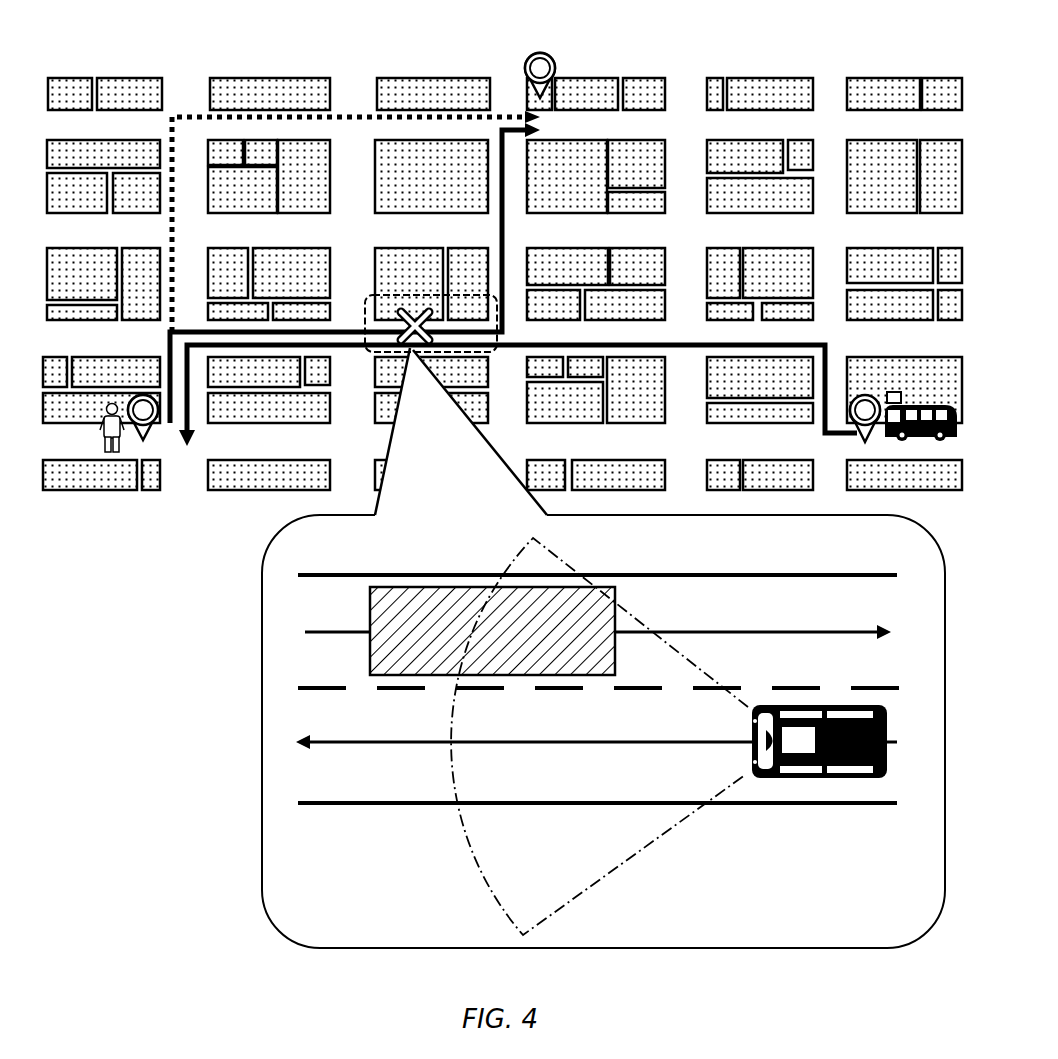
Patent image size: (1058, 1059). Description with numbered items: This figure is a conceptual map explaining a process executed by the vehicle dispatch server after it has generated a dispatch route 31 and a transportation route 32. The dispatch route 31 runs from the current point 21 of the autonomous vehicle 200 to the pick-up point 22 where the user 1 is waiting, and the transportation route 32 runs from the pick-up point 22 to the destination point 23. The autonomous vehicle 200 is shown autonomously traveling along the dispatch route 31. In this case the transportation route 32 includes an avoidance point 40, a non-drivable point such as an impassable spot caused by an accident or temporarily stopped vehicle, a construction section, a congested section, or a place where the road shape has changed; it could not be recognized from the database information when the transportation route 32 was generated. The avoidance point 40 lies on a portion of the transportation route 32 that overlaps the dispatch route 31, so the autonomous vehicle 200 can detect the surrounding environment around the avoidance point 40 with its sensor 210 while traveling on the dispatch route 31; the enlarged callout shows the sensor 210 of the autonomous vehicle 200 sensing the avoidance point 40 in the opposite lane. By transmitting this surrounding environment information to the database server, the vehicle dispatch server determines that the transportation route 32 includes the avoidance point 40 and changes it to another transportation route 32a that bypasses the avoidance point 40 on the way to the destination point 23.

The user 1 is at (100, 433).
The current point 21 is at (866, 394).
The pick-up point 22 is at (139, 396).
The destination point 23 is at (532, 56).
The dispatch route 31 is at (675, 344).
The transportation route 32 is at (344, 331).
The another transportation route 32a is at (341, 116).
The avoidance point 40 is at (403, 300).
The autonomous vehicle 200 is at (930, 384).
The sensor 210 is at (797, 752).